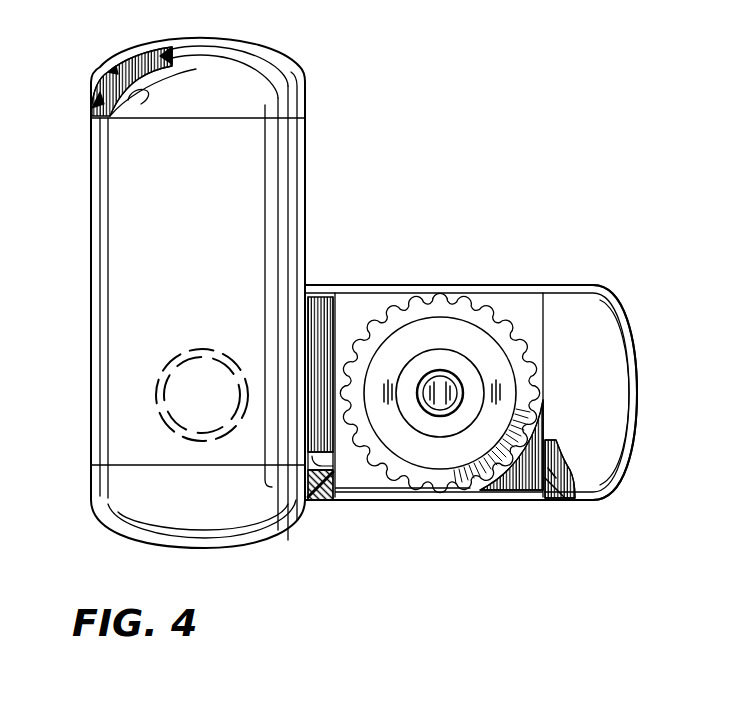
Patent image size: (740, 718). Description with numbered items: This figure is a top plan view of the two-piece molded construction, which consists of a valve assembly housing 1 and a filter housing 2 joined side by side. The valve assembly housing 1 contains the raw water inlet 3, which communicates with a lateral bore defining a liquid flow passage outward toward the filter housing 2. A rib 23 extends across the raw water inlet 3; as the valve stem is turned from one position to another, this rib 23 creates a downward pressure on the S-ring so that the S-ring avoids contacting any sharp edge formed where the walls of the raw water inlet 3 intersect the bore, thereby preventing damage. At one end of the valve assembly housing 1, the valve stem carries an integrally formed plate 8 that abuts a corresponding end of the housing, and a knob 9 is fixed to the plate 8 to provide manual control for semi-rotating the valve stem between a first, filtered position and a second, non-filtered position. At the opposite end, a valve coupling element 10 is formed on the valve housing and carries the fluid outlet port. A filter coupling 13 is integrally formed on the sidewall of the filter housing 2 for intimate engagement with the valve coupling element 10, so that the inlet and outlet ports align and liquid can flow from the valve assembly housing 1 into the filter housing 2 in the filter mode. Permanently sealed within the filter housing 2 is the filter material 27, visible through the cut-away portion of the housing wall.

The valve assembly housing 1 is at (475, 500).
The filter housing 2 is at (92, 235).
The raw water inlet 3 is at (450, 376).
The plate 8 is at (558, 500).
The knob 9 is at (626, 332).
The valve coupling element 10 is at (318, 474).
The filter coupling 13 is at (326, 478).
The rib 23 is at (441, 371).
The filter material 27 is at (133, 82).